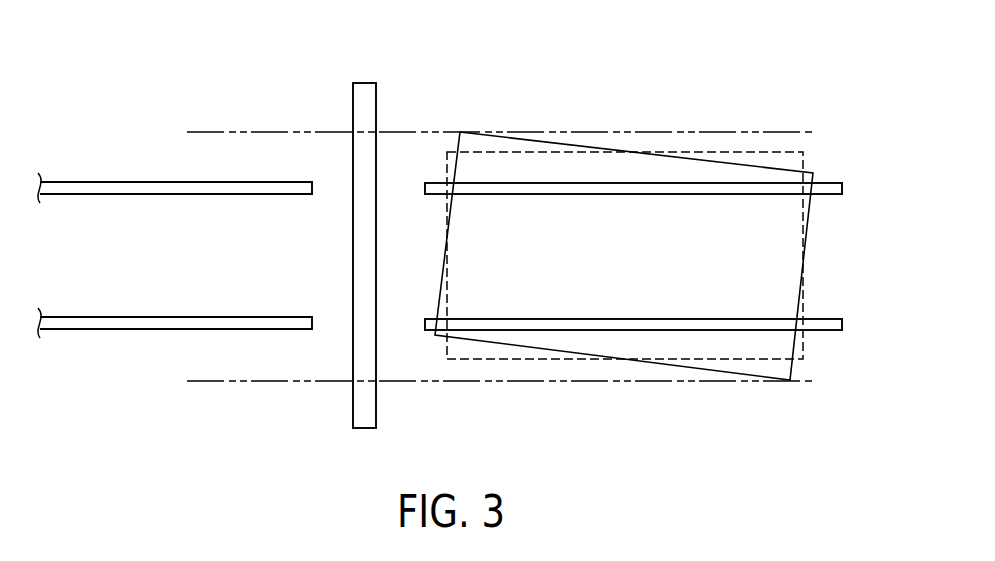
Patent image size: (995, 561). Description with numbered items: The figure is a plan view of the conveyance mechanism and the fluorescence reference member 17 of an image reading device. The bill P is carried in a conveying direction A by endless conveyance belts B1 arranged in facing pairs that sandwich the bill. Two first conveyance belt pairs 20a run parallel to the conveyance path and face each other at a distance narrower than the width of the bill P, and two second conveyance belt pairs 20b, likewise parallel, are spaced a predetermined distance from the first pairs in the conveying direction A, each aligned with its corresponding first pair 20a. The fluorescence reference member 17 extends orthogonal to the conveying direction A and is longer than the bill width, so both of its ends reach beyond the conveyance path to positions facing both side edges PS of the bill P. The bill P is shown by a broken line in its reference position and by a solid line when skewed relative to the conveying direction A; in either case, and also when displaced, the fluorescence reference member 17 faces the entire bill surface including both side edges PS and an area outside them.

The fluorescence reference member 17 is at (376, 417).
The first conveyance belt pair 20a is at (835, 170).
The second conveyance belt pair 20b is at (133, 170).
The conveyance belt B1 is at (62, 187).
The side edge PS is at (560, 142).
The bill P is at (767, 387).
The conveying direction A is at (438, 257).